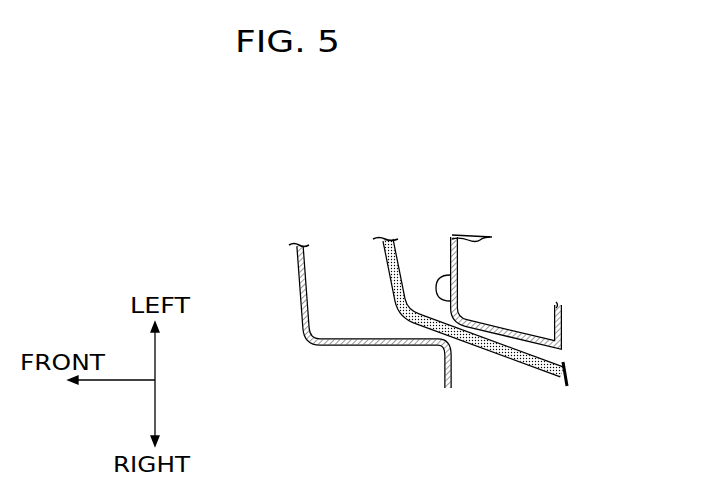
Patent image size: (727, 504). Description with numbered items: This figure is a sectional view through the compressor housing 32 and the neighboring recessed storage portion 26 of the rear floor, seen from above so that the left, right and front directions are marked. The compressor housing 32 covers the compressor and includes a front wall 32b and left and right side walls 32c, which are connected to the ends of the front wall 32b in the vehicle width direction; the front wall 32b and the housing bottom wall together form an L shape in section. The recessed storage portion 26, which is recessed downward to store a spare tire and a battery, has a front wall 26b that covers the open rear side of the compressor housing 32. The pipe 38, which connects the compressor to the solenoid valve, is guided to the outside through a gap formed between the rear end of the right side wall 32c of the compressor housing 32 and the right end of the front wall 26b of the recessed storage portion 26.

The recessed storage portion 26 is at (440, 250).
The front wall 26b is at (452, 275).
The compressor housing 32 is at (340, 358).
The front wall 32b is at (300, 285).
The side wall 32c is at (377, 348).
The pipe 38 is at (385, 274).